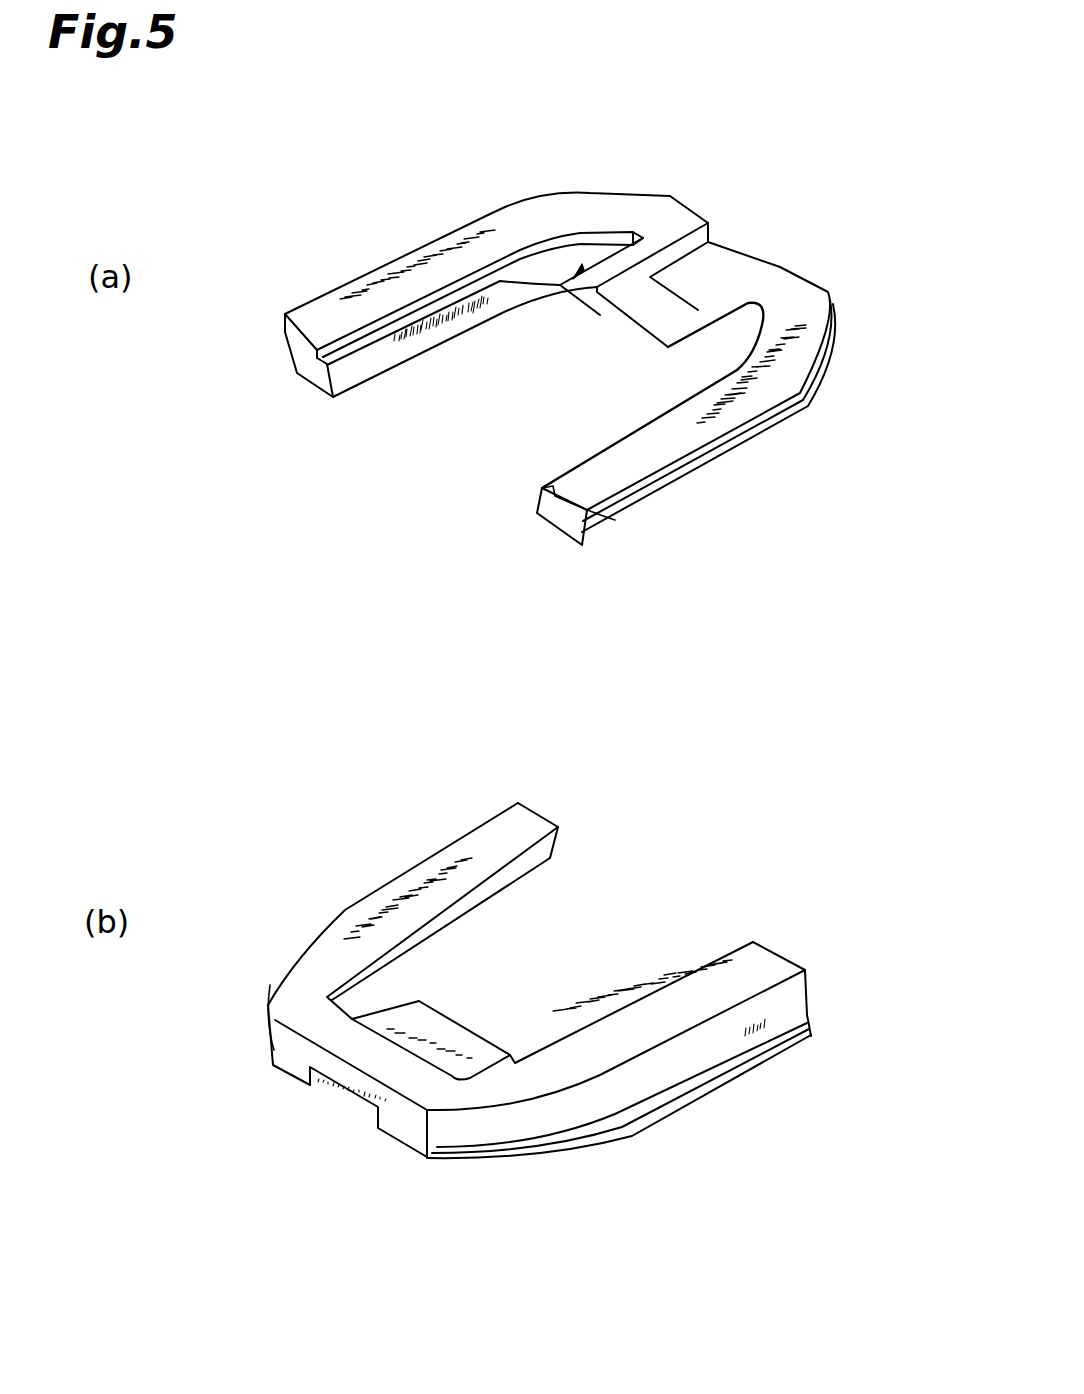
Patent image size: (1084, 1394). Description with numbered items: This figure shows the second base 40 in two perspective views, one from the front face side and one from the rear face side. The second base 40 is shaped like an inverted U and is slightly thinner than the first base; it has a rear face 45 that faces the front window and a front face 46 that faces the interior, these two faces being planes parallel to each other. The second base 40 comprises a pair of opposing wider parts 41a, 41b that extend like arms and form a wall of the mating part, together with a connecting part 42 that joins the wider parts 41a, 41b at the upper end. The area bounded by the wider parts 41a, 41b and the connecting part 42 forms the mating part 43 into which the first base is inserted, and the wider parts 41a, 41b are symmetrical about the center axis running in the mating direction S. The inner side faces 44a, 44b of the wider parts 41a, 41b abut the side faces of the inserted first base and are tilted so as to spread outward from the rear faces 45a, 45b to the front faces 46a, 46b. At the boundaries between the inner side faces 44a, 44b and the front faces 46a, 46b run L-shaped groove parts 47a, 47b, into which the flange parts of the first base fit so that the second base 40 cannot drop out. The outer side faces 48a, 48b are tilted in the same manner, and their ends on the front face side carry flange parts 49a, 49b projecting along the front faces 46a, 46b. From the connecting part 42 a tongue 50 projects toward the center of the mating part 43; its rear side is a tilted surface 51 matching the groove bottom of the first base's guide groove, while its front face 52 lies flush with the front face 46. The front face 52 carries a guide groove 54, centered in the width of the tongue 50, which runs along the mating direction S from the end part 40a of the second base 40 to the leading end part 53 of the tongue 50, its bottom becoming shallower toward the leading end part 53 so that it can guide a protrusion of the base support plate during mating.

The second base 40 is at (328, 192).
The end part of the second base 40a is at (778, 263).
The wider part 41a is at (566, 540).
The wider part 41b is at (318, 398).
The connecting part 42 is at (806, 276).
The mating part 43 is at (471, 421).
The inner side face 44a is at (535, 521).
The inner side face 44b is at (406, 352).
The rear face 45 is at (303, 975).
The rear face of wider part 45a is at (460, 855).
The rear face of wider part 45b is at (732, 968).
The front face 46 is at (547, 210).
The front face of wider part 46a is at (726, 418).
The front face of wider part 46b is at (427, 247).
The groove part 47a is at (570, 468).
The groove part 47b is at (360, 348).
The outer side face 48a is at (604, 524).
The outer side face 48b is at (284, 354).
The flange part 49a is at (664, 488).
The flange part 49b is at (284, 312).
The tongue 50 is at (644, 341).
The tilted surface 51 is at (424, 1020).
The front face of the tongue 52 is at (626, 240).
The leading end part of the tongue 53 is at (596, 307).
The guide groove 54 is at (718, 278).
The mating direction S is at (804, 226).